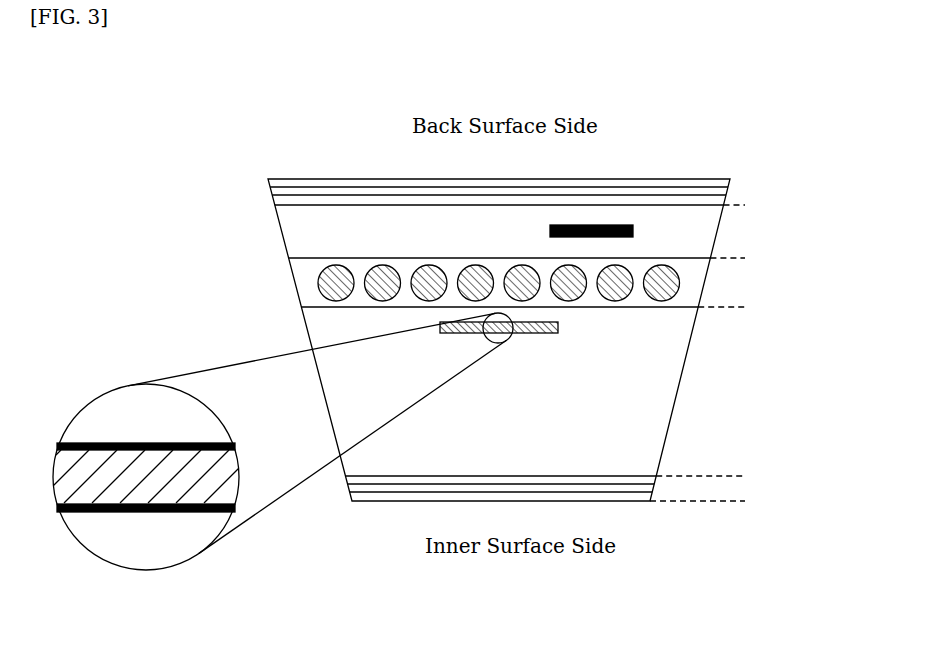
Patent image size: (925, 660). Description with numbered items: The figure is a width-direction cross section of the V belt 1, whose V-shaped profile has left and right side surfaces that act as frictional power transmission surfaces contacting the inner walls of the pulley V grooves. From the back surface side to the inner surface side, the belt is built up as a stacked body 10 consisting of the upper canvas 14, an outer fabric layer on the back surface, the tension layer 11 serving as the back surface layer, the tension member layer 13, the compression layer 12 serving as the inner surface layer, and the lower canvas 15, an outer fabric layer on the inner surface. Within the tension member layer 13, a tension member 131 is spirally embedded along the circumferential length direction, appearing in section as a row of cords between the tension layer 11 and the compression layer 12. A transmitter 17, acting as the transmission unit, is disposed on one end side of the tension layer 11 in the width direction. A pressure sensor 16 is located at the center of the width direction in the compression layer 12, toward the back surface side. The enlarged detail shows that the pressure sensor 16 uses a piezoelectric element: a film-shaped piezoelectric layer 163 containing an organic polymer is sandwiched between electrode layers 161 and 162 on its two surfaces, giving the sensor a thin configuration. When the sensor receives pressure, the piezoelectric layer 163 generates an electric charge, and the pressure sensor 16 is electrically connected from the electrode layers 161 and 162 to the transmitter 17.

The V belt 1 is at (690, 124).
The stacked body 10 is at (782, 177).
The tension layer 11 is at (738, 205).
The compression layer 12 is at (738, 307).
The tension member layer 13 is at (543, 317).
The tension member 131 is at (662, 302).
The upper canvas 14 is at (738, 179).
The lower canvas 15 is at (738, 476).
The pressure sensor 16 is at (530, 336).
The electrode layer 161 is at (183, 442).
The electrode layer 162 is at (120, 514).
The piezoelectric layer 163 is at (143, 478).
The transmitter 17 is at (592, 224).